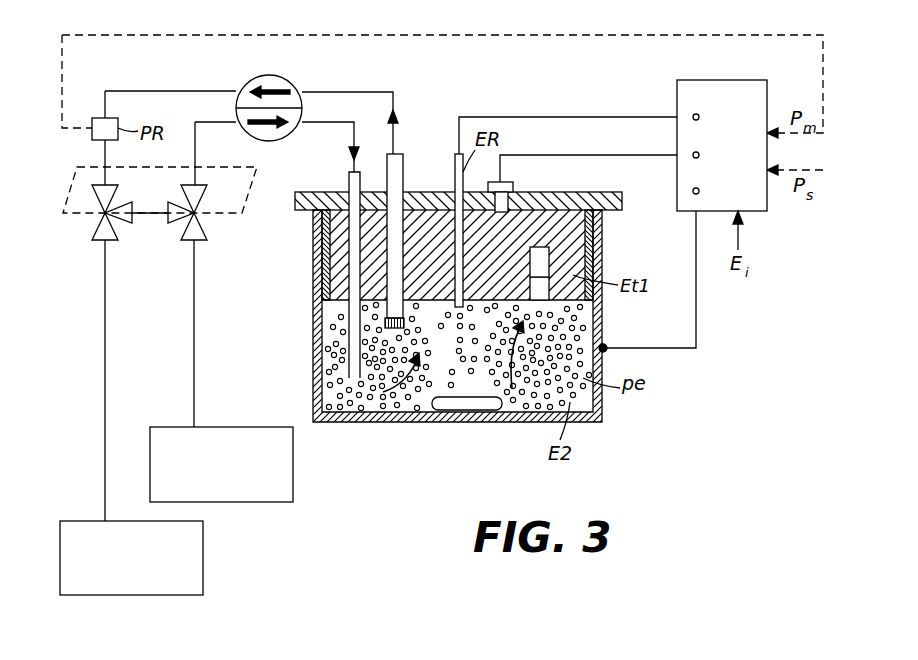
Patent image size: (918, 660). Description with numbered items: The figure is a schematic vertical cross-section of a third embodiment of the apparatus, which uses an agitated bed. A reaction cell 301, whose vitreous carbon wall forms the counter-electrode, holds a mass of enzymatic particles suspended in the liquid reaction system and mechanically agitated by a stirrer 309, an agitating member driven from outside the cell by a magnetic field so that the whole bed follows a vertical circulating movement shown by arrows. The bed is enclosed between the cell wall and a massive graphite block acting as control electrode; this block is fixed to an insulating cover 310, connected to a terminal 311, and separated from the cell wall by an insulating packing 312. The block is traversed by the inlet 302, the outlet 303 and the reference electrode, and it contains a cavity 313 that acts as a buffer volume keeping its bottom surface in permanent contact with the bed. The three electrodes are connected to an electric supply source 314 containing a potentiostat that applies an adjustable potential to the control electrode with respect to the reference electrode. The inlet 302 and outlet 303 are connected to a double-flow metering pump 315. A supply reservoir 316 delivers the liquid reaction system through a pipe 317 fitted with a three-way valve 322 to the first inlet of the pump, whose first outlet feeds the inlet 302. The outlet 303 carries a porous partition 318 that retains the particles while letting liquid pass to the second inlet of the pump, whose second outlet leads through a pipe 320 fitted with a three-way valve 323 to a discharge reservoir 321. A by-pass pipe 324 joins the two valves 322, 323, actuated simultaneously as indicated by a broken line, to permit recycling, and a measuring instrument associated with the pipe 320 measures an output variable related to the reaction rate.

The reaction cell 301 is at (306, 368).
The inlet 302 is at (349, 180).
The outlet 303 is at (398, 172).
The stirrer 309 is at (466, 410).
The insulating cover 310 is at (593, 193).
The terminal 311 is at (511, 184).
The insulating packing 312 is at (328, 262).
The cavity 313 is at (545, 255).
The electric supply source 314 is at (677, 95).
The double-flow metering pump 315 is at (292, 74).
The supply reservoir 316 is at (293, 465).
The pipe 317 is at (195, 118).
The porous partition 318 is at (396, 300).
The pipe 320 is at (150, 91).
The discharge reservoir 321 is at (203, 556).
The three-way valve 322 is at (207, 228).
The three-way valve 323 is at (98, 236).
The by-pass pipe 324 is at (150, 214).